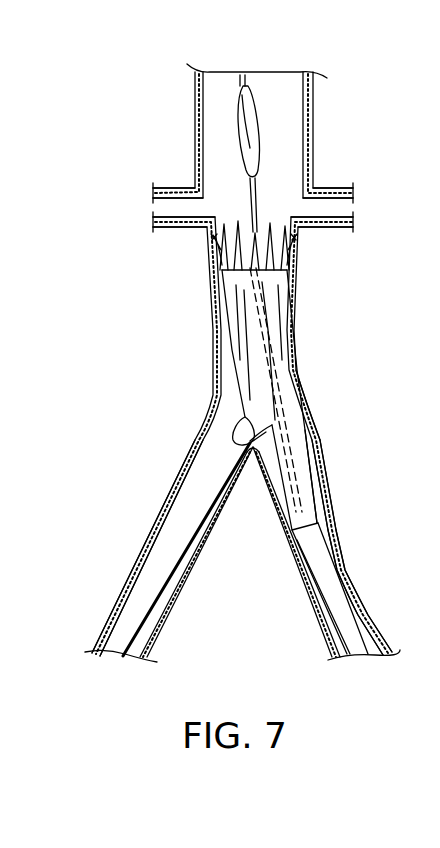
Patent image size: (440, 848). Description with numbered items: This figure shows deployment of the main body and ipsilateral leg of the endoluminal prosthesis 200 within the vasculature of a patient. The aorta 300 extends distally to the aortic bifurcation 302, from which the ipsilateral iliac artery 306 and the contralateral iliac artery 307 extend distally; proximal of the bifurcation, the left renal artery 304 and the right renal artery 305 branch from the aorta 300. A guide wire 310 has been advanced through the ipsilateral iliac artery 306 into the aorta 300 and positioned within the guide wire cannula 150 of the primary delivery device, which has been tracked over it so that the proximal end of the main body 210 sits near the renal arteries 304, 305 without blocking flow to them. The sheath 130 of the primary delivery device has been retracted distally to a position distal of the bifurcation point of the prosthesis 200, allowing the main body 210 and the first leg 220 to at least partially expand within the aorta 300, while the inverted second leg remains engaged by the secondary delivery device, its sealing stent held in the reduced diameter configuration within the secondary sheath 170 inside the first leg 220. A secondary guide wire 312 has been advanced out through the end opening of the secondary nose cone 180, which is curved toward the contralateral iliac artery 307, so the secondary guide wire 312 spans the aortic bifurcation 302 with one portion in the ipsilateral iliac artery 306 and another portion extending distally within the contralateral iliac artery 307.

The guide wire 310 is at (250, 74).
The guide wire cannula 150 is at (254, 193).
The right renal artery 305 is at (177, 191).
The left renal artery 304 is at (331, 190).
The main body 210 is at (290, 268).
The aorta 300 is at (292, 305).
The prosthesis 200 is at (240, 330).
The secondary nose cone 180 is at (233, 426).
The aortic bifurcation 302 is at (305, 426).
The secondary sheath 170 is at (297, 488).
The first leg 220 is at (313, 505).
The sheath 130 is at (317, 548).
The ipsilateral iliac artery 306 is at (340, 558).
The contralateral iliac artery 307 is at (147, 557).
The secondary guide wire 312 is at (147, 608).